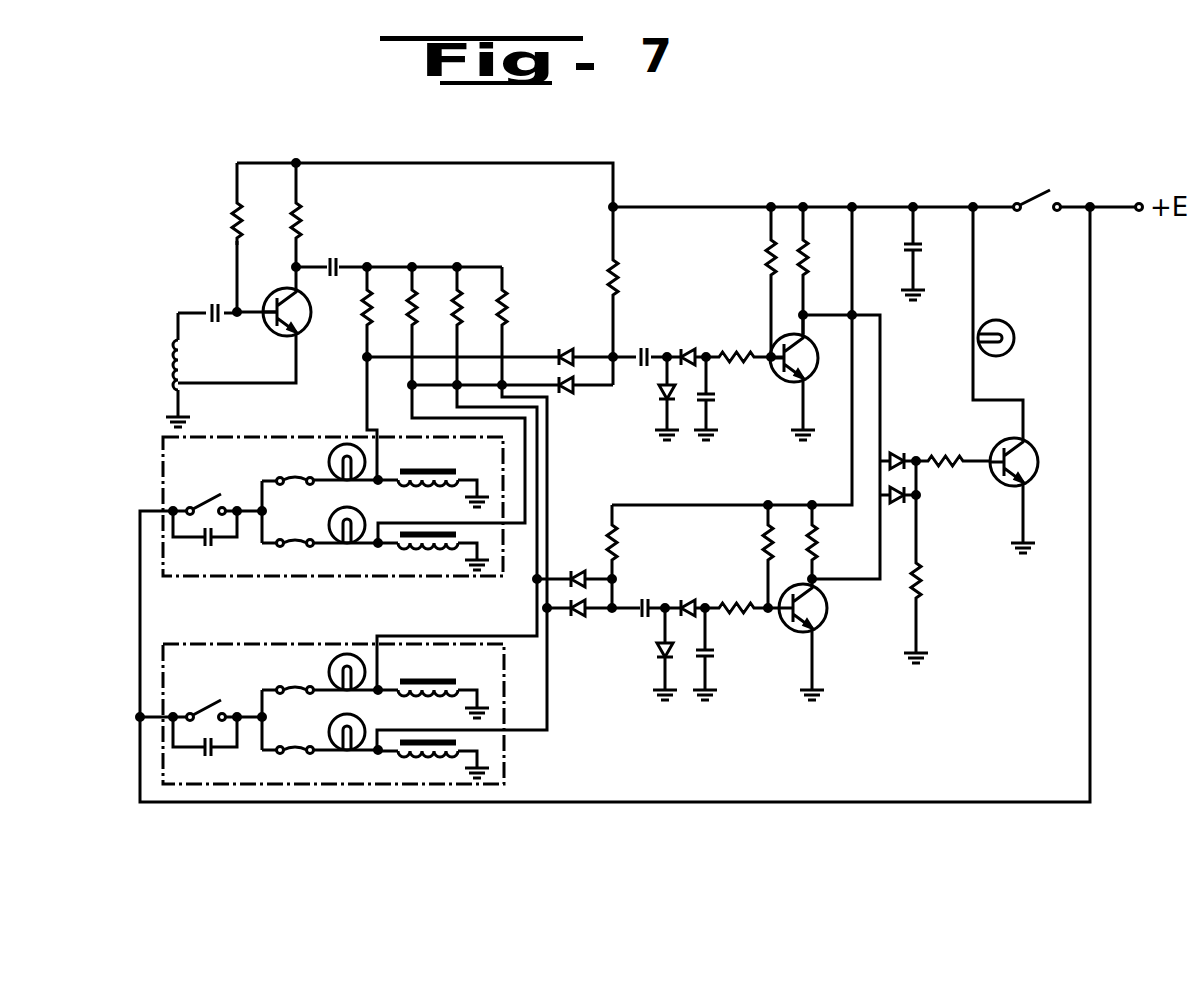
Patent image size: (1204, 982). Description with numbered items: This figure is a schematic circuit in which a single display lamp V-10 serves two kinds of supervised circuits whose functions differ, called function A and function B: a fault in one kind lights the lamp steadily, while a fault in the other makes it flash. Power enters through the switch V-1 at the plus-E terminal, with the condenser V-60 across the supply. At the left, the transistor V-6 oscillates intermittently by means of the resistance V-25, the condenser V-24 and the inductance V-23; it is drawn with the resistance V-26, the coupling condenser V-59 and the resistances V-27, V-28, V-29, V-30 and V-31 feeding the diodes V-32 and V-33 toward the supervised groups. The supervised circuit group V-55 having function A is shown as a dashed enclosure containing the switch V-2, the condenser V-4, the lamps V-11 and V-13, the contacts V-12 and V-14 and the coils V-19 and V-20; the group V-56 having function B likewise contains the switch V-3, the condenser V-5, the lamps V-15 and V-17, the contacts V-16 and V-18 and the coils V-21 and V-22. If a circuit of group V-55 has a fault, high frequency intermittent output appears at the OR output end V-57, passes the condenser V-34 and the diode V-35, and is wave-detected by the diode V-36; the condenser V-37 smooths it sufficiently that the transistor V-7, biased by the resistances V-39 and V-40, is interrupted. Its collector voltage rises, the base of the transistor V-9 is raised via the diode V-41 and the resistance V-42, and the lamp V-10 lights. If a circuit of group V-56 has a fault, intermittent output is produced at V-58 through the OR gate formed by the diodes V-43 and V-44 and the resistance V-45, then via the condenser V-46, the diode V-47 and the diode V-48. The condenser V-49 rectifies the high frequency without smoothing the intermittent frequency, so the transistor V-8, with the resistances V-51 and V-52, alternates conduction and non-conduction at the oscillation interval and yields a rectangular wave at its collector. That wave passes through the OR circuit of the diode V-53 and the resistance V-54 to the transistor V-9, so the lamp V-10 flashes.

The power switch V-1 is at (1034, 196).
The switch V-2 is at (205, 494).
The switch V-3 is at (205, 704).
The capacitor V-4 is at (212, 546).
The capacitor V-5 is at (207, 754).
The transistor V-6 is at (262, 333).
The transistor V-7 is at (808, 379).
The transistor V-8 is at (826, 628).
The transistor V-9 is at (1030, 482).
The display lamp V-10 is at (1008, 352).
The lamp V-11 is at (340, 444).
The switch contact V-12 is at (286, 478).
The lamp V-13 is at (330, 522).
The switch contact V-14 is at (301, 558).
The lamp V-15 is at (347, 652).
The switch contact V-16 is at (286, 686).
The lamp V-17 is at (342, 752).
The switch contact V-18 is at (291, 746).
The relay coil V-19 is at (421, 484).
The relay coil V-20 is at (421, 544).
The relay coil V-21 is at (419, 695).
The relay coil V-22 is at (418, 756).
The inductance V-23 is at (176, 369).
The condenser V-24 is at (215, 304).
The resistance V-25 is at (235, 223).
The resistor V-26 is at (296, 222).
The resistor V-27 is at (367, 311).
The resistor V-28 is at (410, 308).
The resistor V-29 is at (455, 308).
The resistor V-30 is at (500, 308).
The resistor V-31 is at (613, 279).
The diode V-32 is at (566, 346).
The diode V-33 is at (568, 394).
The capacitor V-34 is at (648, 338).
The diode V-35 is at (660, 406).
The diode V-36 is at (690, 346).
The condenser V-37 is at (713, 401).
The resistor V-39 is at (768, 255).
The resistor V-40 is at (803, 256).
The diode V-41 is at (898, 453).
The resistance V-42 is at (956, 468).
The diode V-43 is at (578, 568).
The diode V-44 is at (580, 612).
The resistor V-45 is at (616, 542).
The capacitor V-46 is at (648, 598).
The diode V-47 is at (656, 662).
The diode V-48 is at (692, 600).
The condenser V-49 is at (716, 652).
The resistor V-51 is at (768, 545).
The resistor V-52 is at (818, 547).
The diode V-53 is at (900, 500).
The resistance V-54 is at (918, 580).
The supervised circuit group V-55 is at (163, 456).
The supervised circuit group V-56 is at (207, 643).
The OR output end V-57 is at (618, 362).
The OR output end V-58 is at (614, 615).
The coupling capacitor V-59 is at (335, 262).
The capacitor V-60 is at (922, 248).